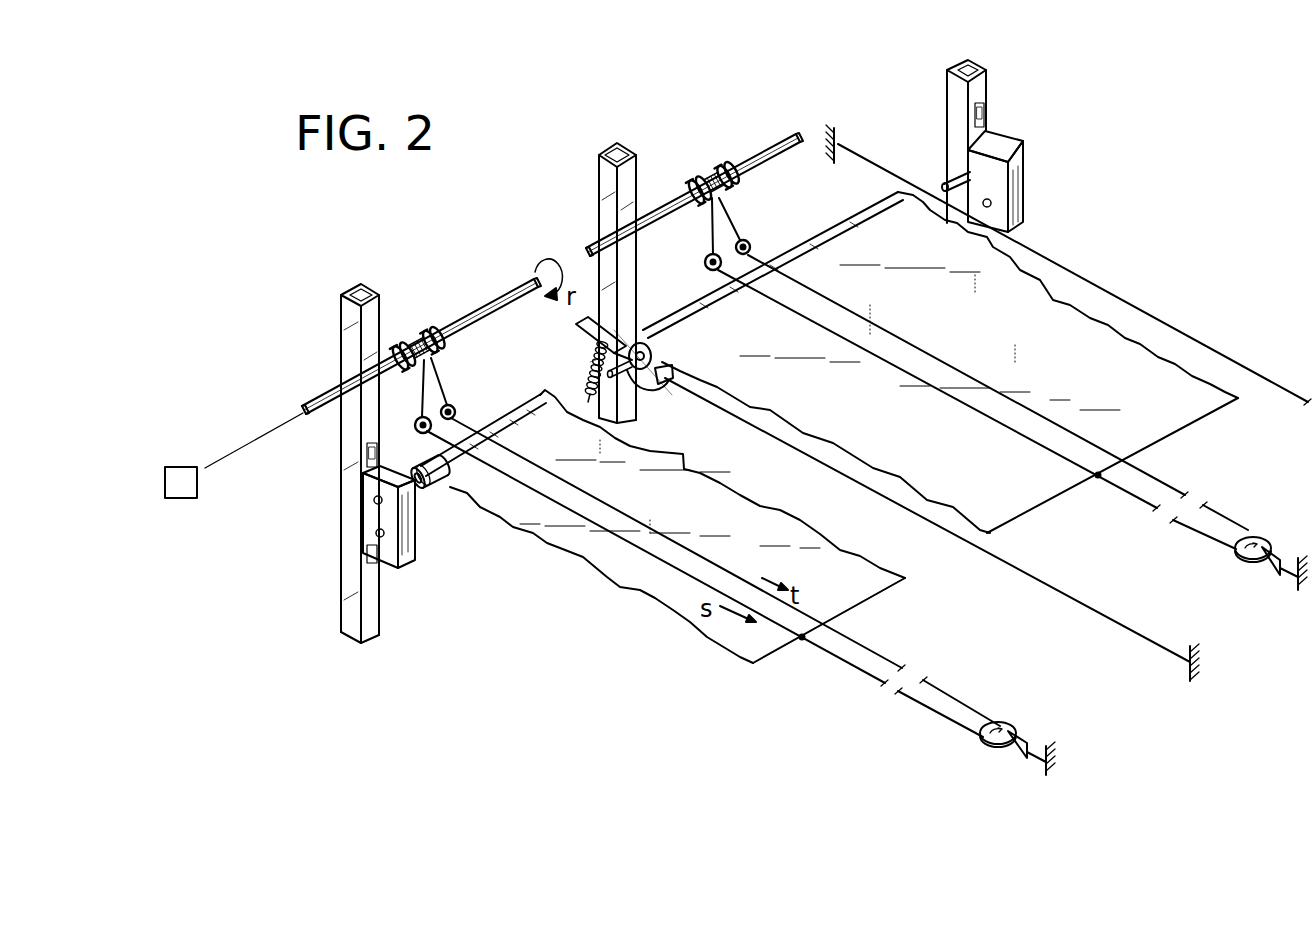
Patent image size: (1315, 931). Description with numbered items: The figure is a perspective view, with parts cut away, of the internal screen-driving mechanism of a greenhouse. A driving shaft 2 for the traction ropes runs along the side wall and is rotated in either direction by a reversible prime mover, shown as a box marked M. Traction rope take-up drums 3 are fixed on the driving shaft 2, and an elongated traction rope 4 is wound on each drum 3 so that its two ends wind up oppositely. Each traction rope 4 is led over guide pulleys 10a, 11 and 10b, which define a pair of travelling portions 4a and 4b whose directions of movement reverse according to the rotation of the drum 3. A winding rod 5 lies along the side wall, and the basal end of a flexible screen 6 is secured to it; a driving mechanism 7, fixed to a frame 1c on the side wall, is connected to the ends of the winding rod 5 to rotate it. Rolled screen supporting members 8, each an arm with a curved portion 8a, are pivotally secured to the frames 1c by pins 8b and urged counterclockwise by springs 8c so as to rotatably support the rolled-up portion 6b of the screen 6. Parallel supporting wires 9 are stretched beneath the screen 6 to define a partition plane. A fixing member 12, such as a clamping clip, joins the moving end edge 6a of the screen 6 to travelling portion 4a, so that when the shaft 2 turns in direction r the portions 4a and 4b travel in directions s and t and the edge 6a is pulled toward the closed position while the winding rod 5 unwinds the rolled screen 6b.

The frame 1c is at (343, 345).
The driving shaft 2 is at (316, 400).
The traction rope take-up drum 3 is at (434, 338).
The traction rope 4 is at (437, 389).
The travelling portion 4a is at (640, 558).
The travelling portion 4b is at (673, 539).
The winding rod 5 is at (420, 496).
The flexible screen 6 is at (683, 615).
The moving end edge 6a is at (863, 607).
The rolled-up portion 6b is at (643, 327).
The driving mechanism 7 is at (408, 547).
The rolled screen supporting member 8 is at (641, 402).
The curved portion 8a is at (650, 386).
The pin 8b is at (577, 328).
The spring 8c is at (589, 378).
The supporting wire 9 is at (1040, 252).
The guide pulley 10a is at (412, 427).
The guide pulley 10b is at (457, 410).
The guide pulley 11 is at (1010, 728).
The fixing member 12 is at (803, 642).